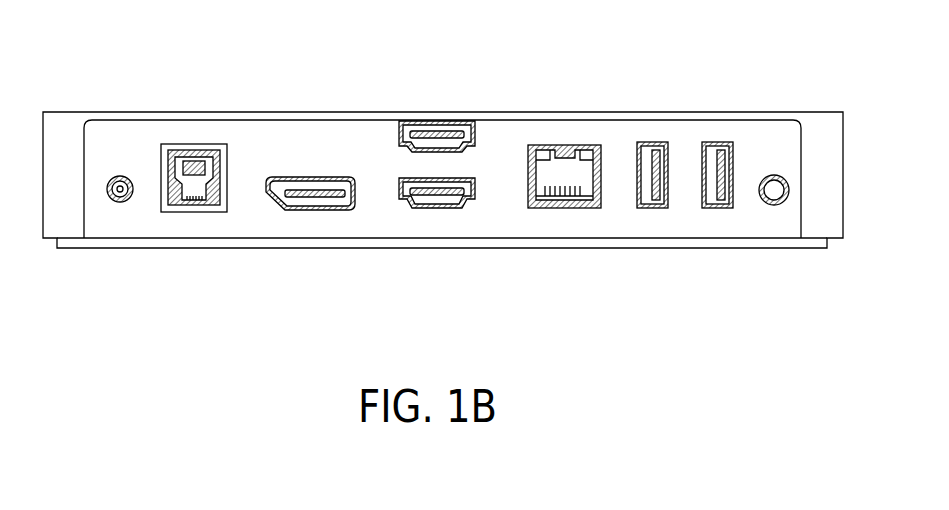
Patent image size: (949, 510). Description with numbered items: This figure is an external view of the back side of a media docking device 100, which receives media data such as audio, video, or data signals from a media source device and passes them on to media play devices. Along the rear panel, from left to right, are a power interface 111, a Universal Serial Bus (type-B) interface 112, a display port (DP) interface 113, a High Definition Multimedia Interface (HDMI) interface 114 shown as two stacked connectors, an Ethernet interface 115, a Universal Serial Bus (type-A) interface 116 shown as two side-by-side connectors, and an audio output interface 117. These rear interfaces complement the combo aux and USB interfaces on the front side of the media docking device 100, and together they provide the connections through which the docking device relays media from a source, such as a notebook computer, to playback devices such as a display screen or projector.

The media docking device 100 is at (790, 112).
The power interface 111 is at (120, 203).
The Universal Serial Bus (type-B) interface 112 is at (192, 213).
The display port (DP) interface 113 is at (313, 197).
The High Definition Multimedia Interface (HDMI) interface 114 is at (450, 143).
The Ethernet interface 115 is at (567, 167).
The Universal Serial Bus (type-A) interface 116 is at (713, 198).
The audio output interface 117 is at (774, 205).